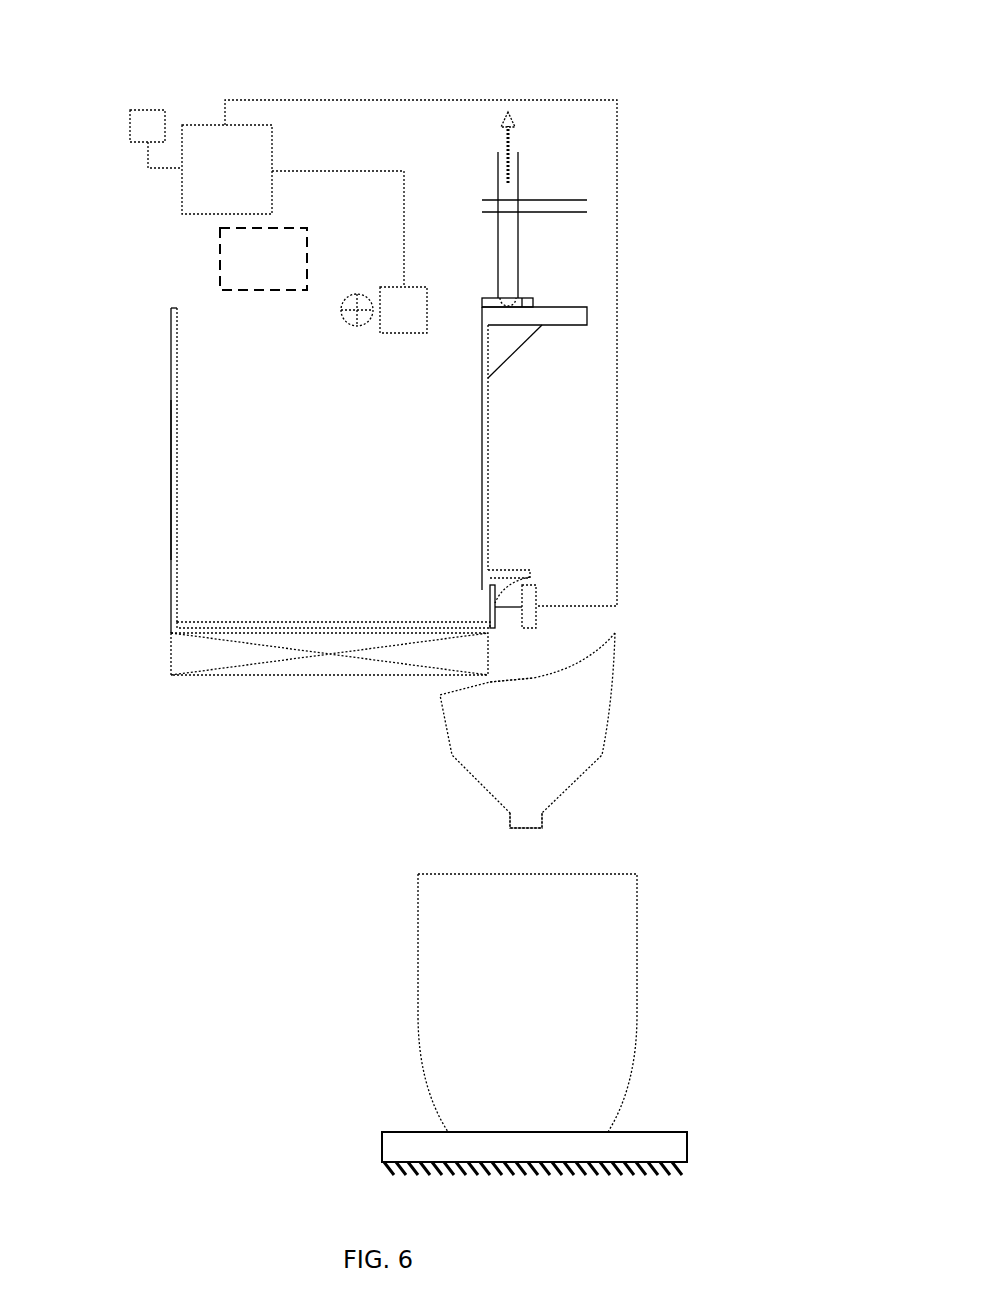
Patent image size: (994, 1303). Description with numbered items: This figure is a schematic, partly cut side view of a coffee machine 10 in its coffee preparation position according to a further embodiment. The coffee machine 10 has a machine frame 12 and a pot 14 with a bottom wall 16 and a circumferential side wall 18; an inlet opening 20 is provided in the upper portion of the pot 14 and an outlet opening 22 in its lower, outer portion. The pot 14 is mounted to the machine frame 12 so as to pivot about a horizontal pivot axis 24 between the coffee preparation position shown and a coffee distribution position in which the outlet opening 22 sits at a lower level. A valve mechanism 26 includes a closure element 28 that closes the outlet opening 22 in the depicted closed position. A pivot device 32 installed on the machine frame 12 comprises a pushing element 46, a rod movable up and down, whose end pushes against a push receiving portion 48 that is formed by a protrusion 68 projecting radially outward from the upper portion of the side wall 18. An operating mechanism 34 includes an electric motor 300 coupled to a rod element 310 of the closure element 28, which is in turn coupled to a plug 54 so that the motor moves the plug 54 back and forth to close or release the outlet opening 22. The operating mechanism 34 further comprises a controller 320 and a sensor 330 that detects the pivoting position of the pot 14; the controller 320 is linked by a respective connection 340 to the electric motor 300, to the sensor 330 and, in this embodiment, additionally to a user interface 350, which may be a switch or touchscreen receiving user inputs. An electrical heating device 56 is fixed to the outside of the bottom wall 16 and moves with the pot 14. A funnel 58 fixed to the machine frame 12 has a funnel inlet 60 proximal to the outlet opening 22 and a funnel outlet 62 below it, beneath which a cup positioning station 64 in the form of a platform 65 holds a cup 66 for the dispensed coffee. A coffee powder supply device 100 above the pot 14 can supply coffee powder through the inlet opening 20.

The coffee machine 10 is at (258, 76).
The machine frame 12 is at (484, 205).
The pot 14 is at (168, 314).
The bottom wall 16 is at (171, 628).
The circumferential side wall 18 is at (171, 450).
The inlet opening 20 is at (250, 318).
The outlet opening 22 is at (485, 612).
The horizontal pivot axis 24 is at (353, 325).
The valve mechanism 26 is at (512, 556).
The closure element 28 is at (526, 582).
The pivot device 32 is at (532, 162).
The operating mechanism 34 is at (188, 118).
The pushing element 46 is at (512, 256).
The push receiving portion 48 is at (500, 300).
The plug 54 is at (490, 600).
The electrical heating device 56 is at (177, 650).
The funnel 58 is at (597, 713).
The funnel inlet 60 is at (482, 682).
The funnel outlet 62 is at (527, 820).
The cup positioning station 64 is at (376, 1145).
The platform 65 is at (655, 1137).
The cup 66 is at (432, 983).
The protrusion 68 is at (513, 320).
The coffee powder supply device 100 is at (230, 268).
The electric motor 300 is at (528, 600).
The rod element 310 is at (510, 612).
The controller 320 is at (195, 188).
The sensor 330 is at (392, 293).
The connection 340 is at (408, 100).
The user interface 350 is at (135, 124).